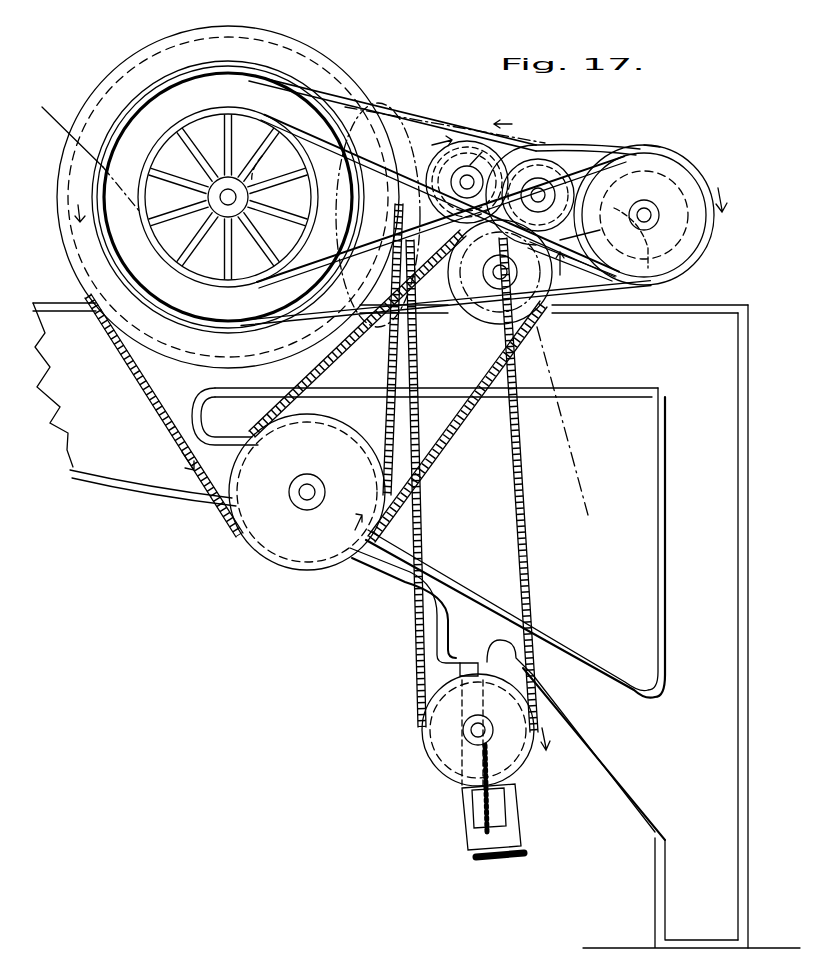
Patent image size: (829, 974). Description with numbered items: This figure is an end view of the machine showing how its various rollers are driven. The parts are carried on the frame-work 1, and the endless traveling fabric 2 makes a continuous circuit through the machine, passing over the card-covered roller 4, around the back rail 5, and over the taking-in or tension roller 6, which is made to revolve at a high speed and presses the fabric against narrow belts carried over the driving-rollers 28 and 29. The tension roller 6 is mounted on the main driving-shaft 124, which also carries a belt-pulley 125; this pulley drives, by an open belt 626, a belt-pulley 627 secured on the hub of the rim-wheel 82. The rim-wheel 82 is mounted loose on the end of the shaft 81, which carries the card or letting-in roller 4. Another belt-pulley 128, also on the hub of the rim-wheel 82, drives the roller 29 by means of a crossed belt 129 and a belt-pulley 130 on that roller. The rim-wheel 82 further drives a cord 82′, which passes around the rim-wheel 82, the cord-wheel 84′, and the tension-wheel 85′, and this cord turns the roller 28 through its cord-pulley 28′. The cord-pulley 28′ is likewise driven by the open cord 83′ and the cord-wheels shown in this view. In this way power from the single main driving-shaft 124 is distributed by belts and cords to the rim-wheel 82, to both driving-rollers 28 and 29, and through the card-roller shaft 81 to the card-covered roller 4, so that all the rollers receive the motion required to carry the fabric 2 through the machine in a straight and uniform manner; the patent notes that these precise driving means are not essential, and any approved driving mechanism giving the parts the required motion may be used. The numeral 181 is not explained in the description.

The frame-work 1 is at (416, 625).
The endless traveling fabric 2 is at (315, 301).
The card-covered roller 4 is at (262, 160).
The back rail 5 is at (368, 102).
The taking-in or tension roller 6 is at (600, 205).
The driving-roller 28 is at (452, 172).
The cord-pulley 28′ is at (497, 292).
The driving-roller 29 is at (672, 186).
The shaft 81 is at (218, 197).
The rim-wheel 82 is at (278, 47).
The cord 82′ is at (180, 405).
The open cord 83′ is at (450, 418).
The cord-wheel 84′ is at (307, 492).
The tension-wheel 85′ is at (478, 547).
The main driving-shaft 124 is at (592, 172).
The belt-pulley 125 is at (548, 160).
The belt-pulley 128 is at (208, 122).
The crossed belt 129 is at (352, 140).
The belt-pulley 130 is at (660, 150).
The arm 181 is at (492, 140).
The open belt 626 is at (412, 104).
The belt-pulley 627 is at (218, 74).